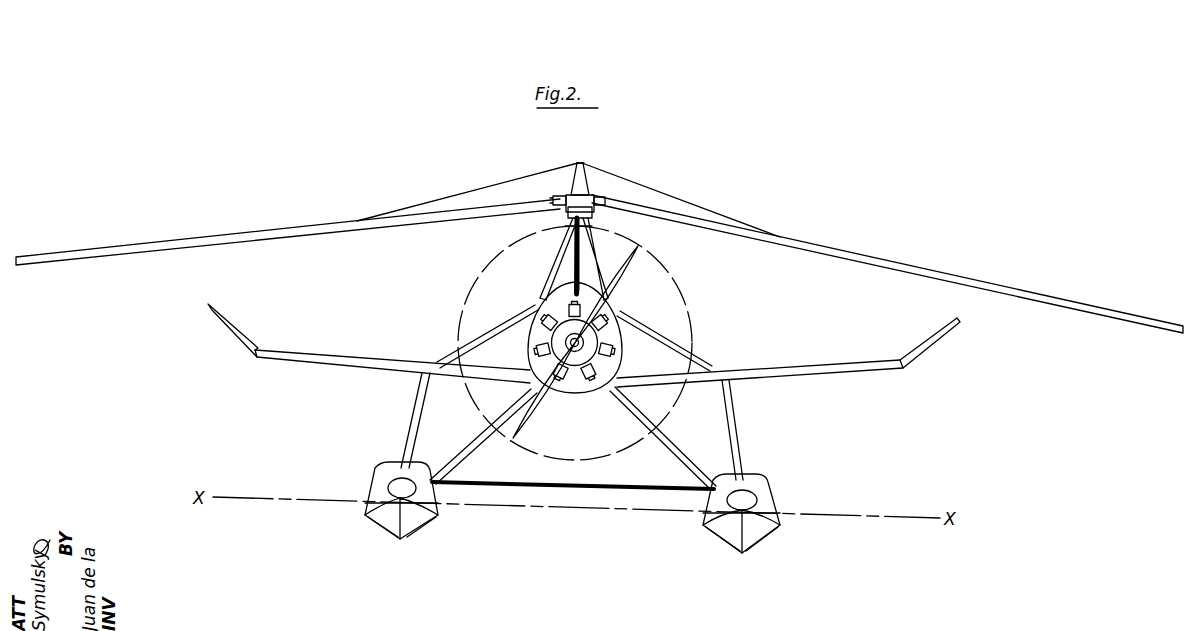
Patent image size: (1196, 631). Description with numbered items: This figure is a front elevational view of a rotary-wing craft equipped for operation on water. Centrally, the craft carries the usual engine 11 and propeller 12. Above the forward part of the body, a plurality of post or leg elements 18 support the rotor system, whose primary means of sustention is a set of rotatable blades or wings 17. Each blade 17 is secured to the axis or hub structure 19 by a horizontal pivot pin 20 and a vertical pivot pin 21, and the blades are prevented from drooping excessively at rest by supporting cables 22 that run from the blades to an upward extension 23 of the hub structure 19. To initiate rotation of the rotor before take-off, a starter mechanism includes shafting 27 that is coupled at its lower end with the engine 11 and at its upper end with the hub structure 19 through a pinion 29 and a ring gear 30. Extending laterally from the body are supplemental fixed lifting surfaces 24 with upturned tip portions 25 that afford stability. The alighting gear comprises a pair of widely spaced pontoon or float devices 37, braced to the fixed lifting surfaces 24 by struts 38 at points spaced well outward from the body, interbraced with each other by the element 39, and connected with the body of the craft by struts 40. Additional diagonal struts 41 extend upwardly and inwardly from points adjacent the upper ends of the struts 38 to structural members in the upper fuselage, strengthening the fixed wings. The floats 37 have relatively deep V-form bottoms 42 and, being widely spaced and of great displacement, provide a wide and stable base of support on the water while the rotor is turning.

The engine 11 is at (587, 380).
The propeller 12 is at (612, 290).
The rotatable blades or wings 17 is at (205, 237).
The post or leg elements 18 is at (559, 254).
The axis or hub structure 19 is at (588, 196).
The horizontal pivot pin 20 is at (562, 197).
The vertical pivot pin 21 is at (562, 209).
The supporting cables 22 is at (438, 200).
The upward extension of the axis structure 23 is at (584, 165).
The supplemental fixed lifting surfaces 24 is at (322, 353).
The upturned tip portions 25 is at (229, 325).
The shafting 27 is at (575, 266).
The pinion 29 is at (563, 228).
The ring gear 30 is at (592, 212).
The pontoon or float devices 37 is at (375, 487).
The struts 38 is at (417, 403).
The interbracing element 39 is at (650, 485).
The struts 40 is at (461, 456).
The diagonal struts 41 is at (499, 323).
The V-form bottoms 42 is at (420, 530).